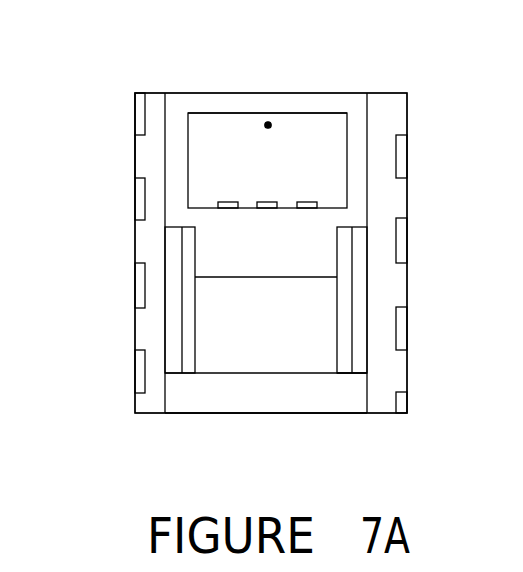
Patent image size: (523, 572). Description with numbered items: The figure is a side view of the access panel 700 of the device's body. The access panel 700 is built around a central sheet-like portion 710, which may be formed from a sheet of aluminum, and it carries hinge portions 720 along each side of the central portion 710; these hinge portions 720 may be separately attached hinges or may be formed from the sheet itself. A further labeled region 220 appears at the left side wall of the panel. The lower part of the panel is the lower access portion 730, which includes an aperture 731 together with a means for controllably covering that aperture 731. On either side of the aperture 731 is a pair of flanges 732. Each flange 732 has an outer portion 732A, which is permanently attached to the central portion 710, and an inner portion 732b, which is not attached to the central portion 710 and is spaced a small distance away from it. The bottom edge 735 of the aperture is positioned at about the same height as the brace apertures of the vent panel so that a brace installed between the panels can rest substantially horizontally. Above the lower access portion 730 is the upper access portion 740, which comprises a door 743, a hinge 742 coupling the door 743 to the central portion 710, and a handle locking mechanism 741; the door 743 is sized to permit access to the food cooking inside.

The access panel 700 is at (327, 242).
The central sheet-like portion 710 is at (286, 232).
The hinge portions 720 is at (217, 235).
The side wall 220 is at (81, 141).
The upper access portion 740 is at (237, 125).
The door 743 is at (251, 70).
The handle locking mechanism 741 is at (331, 75).
The hinge 742 is at (271, 185).
The flanges 732 is at (106, 268).
The inner portion 732b is at (425, 278).
The outer portion 732A is at (307, 420).
The aperture 731 is at (266, 265).
The bottom edge 735 is at (261, 426).
The lower access portion 730 is at (210, 440).